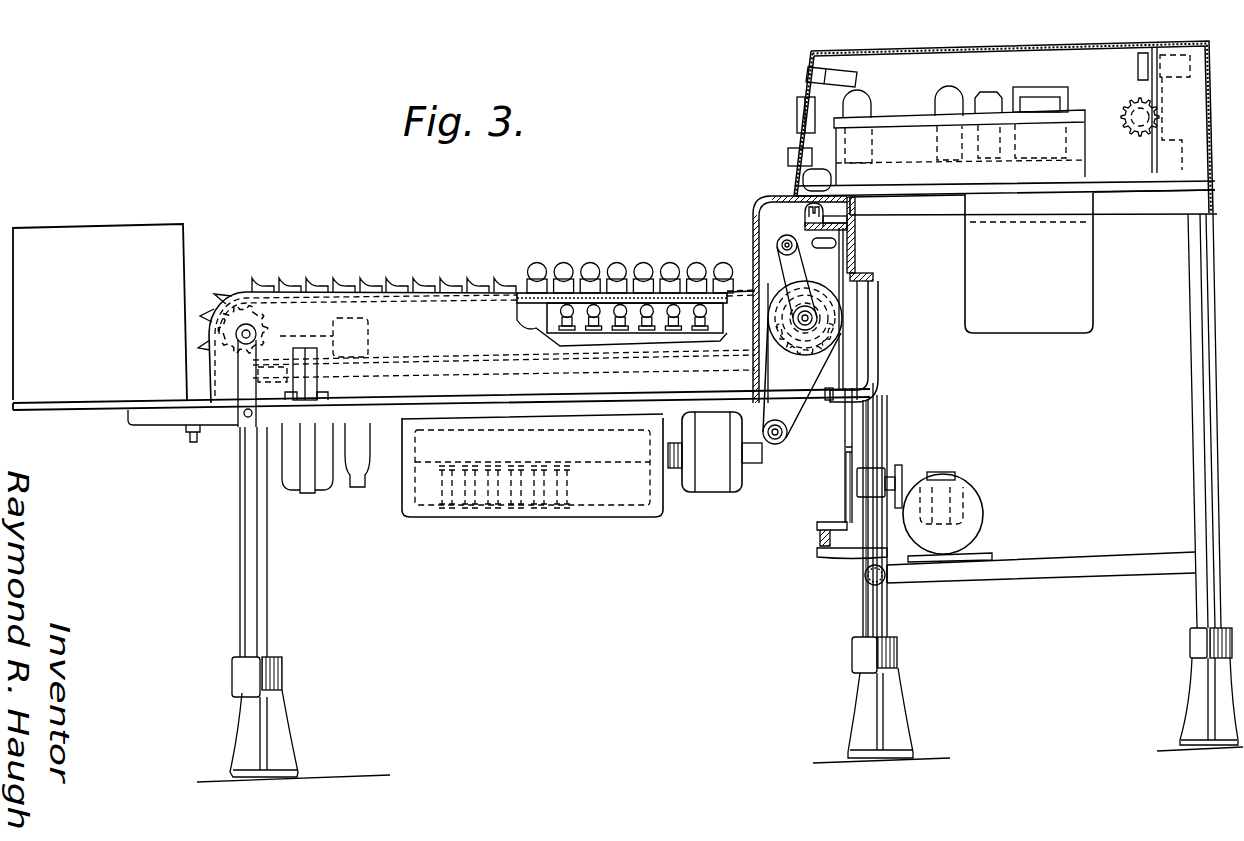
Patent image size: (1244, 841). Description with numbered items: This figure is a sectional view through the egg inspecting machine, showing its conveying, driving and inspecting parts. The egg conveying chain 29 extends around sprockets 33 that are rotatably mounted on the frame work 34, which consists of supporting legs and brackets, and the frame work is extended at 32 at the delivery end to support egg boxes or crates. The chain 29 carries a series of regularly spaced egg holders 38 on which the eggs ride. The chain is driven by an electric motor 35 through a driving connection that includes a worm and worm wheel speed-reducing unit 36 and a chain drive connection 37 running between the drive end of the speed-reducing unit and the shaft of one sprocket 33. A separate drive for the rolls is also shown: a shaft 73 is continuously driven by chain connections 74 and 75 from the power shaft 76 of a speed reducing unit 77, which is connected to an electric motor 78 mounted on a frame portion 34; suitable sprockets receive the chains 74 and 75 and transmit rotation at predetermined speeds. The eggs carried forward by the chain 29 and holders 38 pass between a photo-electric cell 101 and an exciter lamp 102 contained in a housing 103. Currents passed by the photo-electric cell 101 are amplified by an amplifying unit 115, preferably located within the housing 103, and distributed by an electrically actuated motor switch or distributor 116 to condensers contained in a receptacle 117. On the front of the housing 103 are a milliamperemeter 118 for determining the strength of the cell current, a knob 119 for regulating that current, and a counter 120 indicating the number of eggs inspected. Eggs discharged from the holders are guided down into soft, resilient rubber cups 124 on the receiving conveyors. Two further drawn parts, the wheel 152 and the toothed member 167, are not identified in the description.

The egg conveying chain 29 is at (849, 415).
The frame work extension 32 is at (150, 425).
The sprockets 33 is at (847, 457).
The frame work 34 is at (628, 404).
The electric motor 35 is at (979, 512).
The worm and worm wheel speed-reducing unit 36 is at (942, 470).
The chain drive connection 37 is at (897, 465).
The egg holders 38 is at (828, 226).
The shaft 73 is at (779, 236).
The chain connection 74 is at (768, 290).
The chain connection 75 is at (760, 373).
The power shaft 76 is at (778, 447).
The speed reducing unit 77 is at (783, 468).
The electric motor 78 is at (720, 490).
The photo-electric cell 101 is at (800, 183).
The exciter lamp 102 is at (837, 247).
The housing 103 is at (997, 36).
The amplifying unit 115 is at (910, 160).
The motor switch or distributor 116 is at (1130, 82).
The receptacle 117 is at (1077, 147).
The milliamperemeter 118 is at (797, 112).
The knob 119 is at (795, 145).
The counter 120 is at (838, 72).
The rubber cups 124 is at (390, 282).
The drive wheel 152 is at (817, 318).
The sprocket 167 is at (780, 337).